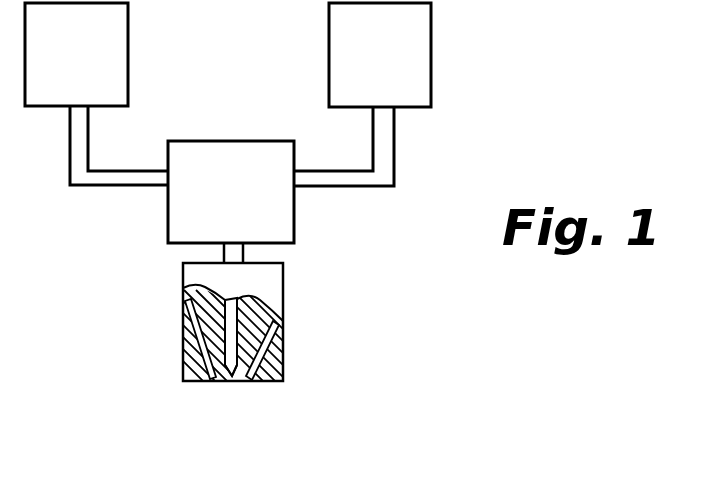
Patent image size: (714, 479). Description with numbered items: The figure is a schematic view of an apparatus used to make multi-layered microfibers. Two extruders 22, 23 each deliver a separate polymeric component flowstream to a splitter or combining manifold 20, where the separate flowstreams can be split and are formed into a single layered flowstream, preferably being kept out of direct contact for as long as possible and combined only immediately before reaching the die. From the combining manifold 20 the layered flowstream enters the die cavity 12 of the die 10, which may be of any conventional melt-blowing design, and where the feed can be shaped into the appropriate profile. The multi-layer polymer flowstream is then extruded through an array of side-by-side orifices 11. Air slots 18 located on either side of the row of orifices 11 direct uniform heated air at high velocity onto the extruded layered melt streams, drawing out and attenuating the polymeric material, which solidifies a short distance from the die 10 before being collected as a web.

The die 10 is at (286, 292).
The orifices 11 is at (233, 380).
The die cavity 12 is at (232, 321).
The air slots 18 is at (197, 338).
The splitter or combining manifold 20 is at (228, 141).
The extruder 22 is at (128, 40).
The extruder 23 is at (431, 40).